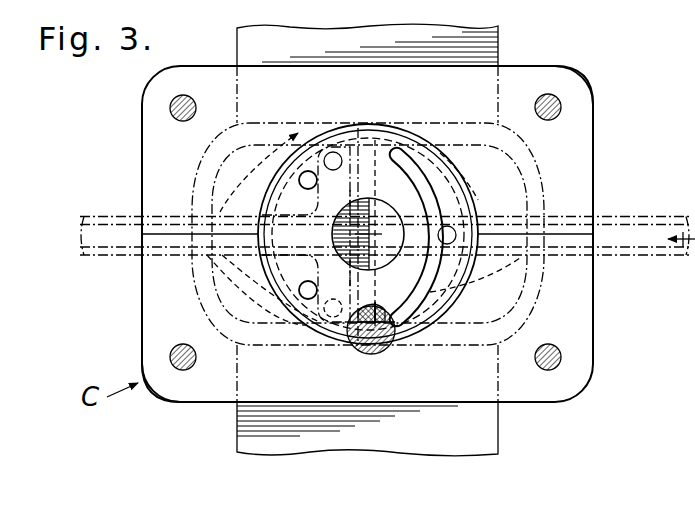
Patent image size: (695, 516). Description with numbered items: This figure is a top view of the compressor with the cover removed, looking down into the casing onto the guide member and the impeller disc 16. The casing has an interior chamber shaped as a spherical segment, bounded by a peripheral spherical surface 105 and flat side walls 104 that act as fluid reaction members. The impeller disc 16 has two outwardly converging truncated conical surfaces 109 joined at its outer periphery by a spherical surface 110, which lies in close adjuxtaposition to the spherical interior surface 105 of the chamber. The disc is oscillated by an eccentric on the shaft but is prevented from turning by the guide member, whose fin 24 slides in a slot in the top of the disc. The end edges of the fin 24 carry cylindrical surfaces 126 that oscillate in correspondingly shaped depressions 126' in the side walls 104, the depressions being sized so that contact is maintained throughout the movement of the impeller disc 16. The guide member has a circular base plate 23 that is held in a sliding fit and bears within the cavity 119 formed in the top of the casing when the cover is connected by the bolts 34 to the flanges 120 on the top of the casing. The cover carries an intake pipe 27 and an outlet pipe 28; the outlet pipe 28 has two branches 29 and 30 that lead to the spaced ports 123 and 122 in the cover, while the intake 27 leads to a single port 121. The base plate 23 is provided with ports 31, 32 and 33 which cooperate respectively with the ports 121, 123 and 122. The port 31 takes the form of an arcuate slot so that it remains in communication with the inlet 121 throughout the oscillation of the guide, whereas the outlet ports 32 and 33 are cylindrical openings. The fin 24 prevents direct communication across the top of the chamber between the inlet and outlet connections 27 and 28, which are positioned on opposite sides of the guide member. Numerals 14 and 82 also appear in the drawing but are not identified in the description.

The end plate 14 is at (585, 112).
The impeller disc 16 is at (497, 197).
The circular base plate 23 is at (397, 137).
The fin 24 is at (366, 144).
The intake pipe 27 is at (560, 223).
The outlet pipe 28 is at (168, 222).
The branch 29 is at (337, 318).
The branch 30 is at (337, 153).
The port 31 is at (447, 205).
The outlet port 32 is at (307, 300).
The outlet port 33 is at (308, 170).
The bolts 34 is at (187, 96).
The rotor hub 82 is at (370, 232).
The flat side walls 104 is at (508, 295).
The peripheral spherical surface 105 is at (262, 145).
The truncated conical surfaces 109 is at (242, 268).
The spherical surface 110 is at (263, 300).
The cavity 119 is at (287, 302).
The flanges 120 is at (570, 80).
The inlet port 121 is at (452, 290).
The outlet port 122 is at (330, 187).
The outlet port 123 is at (330, 322).
The cylindrical surfaces 126 is at (388, 291).
The depressions 126' is at (378, 348).